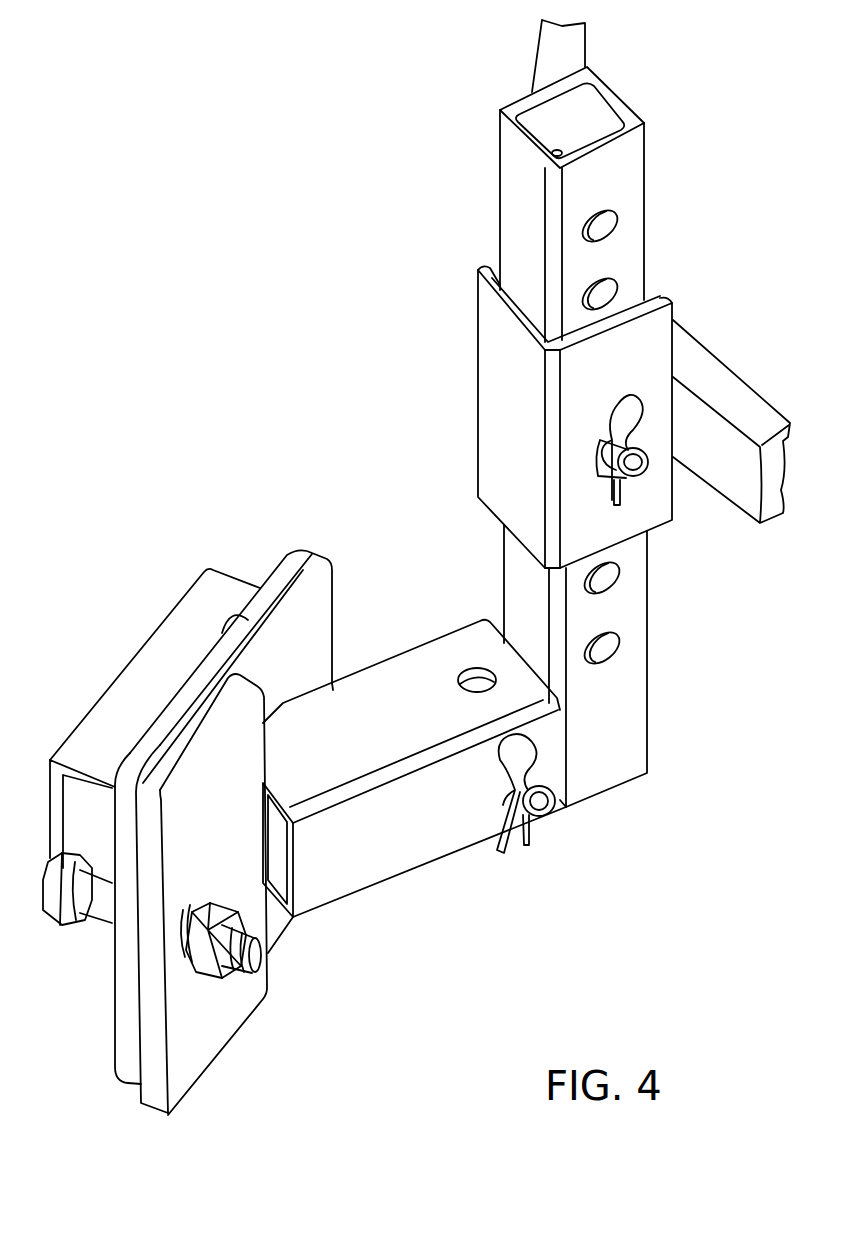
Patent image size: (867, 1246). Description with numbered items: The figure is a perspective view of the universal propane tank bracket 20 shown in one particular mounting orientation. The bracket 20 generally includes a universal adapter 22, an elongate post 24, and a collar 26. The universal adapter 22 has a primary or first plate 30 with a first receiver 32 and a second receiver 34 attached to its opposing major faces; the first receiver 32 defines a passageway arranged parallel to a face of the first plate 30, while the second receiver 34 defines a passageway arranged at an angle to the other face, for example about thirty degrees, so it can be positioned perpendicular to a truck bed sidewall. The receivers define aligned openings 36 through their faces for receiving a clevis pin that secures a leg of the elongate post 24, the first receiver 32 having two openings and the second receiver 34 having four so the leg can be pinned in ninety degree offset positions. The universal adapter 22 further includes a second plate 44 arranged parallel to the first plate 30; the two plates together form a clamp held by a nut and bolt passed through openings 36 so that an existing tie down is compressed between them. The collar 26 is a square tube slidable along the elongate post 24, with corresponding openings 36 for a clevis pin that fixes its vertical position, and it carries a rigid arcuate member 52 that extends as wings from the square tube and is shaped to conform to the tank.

The universal propane tank bracket 20 is at (224, 250).
The universal adapter 22 is at (300, 553).
The elongate post 24 is at (648, 658).
The collar 26 is at (478, 386).
The first plate 30 is at (318, 608).
The first receiver 32 is at (160, 660).
The second receiver 34 is at (407, 845).
The openings 36 is at (478, 669).
The second plate 44 is at (218, 1030).
The arcuate member 52 is at (737, 398).